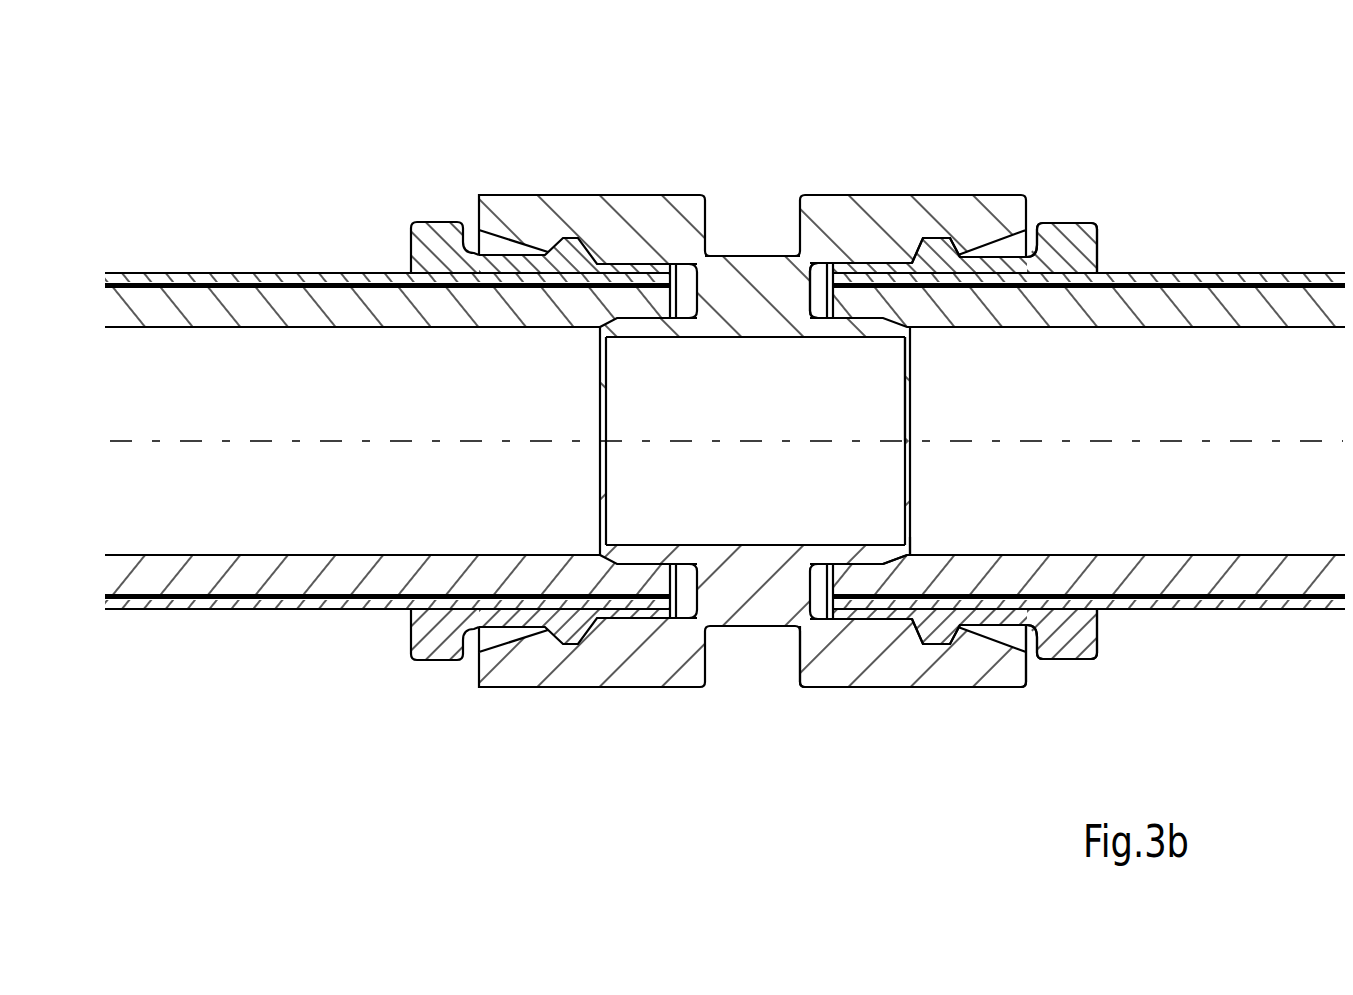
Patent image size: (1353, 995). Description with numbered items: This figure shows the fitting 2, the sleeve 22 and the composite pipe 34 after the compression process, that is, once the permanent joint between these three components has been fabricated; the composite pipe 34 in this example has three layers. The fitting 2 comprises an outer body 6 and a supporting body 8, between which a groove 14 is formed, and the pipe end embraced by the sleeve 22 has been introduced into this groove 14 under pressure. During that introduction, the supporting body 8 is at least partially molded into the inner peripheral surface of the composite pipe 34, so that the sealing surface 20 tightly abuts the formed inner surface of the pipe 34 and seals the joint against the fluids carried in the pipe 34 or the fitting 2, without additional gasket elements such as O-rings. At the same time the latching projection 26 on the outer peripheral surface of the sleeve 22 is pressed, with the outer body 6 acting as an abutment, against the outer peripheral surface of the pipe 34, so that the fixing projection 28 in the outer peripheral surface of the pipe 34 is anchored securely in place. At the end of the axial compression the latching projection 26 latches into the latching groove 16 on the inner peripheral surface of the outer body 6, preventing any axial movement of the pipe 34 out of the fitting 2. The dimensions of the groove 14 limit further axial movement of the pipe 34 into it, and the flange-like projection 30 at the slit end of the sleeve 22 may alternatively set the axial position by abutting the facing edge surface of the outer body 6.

The fitting 2 is at (784, 120).
The outer body 6 is at (1012, 673).
The supporting body 8 is at (868, 330).
The groove 14 is at (811, 322).
The latching groove 16 is at (920, 246).
The sealing surface 20 is at (904, 554).
The sleeve 22 is at (1110, 210).
The latching projection 26 is at (948, 633).
The fixing projection 28 is at (952, 290).
The flange-like projection 30 is at (1096, 658).
The composite pipe 34 is at (1257, 632).